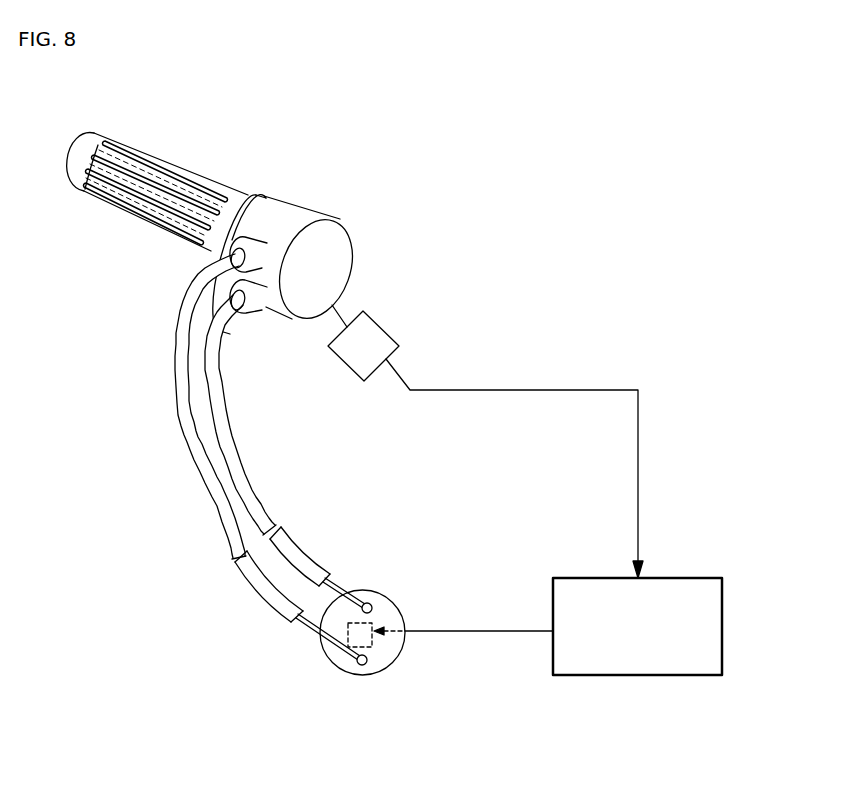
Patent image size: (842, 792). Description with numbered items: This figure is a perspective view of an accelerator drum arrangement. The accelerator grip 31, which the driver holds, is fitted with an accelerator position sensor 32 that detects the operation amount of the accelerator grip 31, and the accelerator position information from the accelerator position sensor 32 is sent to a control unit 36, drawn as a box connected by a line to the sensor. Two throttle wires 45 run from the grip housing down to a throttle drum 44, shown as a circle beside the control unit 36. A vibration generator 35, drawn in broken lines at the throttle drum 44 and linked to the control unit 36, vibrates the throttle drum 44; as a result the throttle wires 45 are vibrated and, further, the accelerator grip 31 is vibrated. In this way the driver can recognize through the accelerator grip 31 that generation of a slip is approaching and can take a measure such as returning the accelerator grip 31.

The accelerator grip 31 is at (175, 170).
The accelerator position sensor 32 is at (387, 328).
The vibration generator 35 is at (374, 648).
The control unit 36 is at (647, 655).
The throttle drum 44 is at (337, 662).
The throttle wires 45 is at (327, 590).